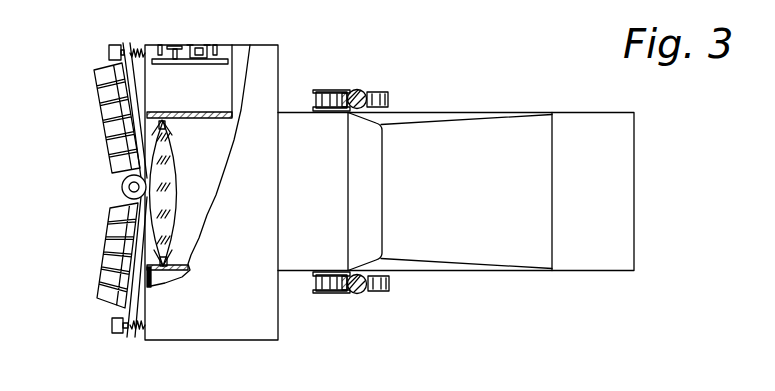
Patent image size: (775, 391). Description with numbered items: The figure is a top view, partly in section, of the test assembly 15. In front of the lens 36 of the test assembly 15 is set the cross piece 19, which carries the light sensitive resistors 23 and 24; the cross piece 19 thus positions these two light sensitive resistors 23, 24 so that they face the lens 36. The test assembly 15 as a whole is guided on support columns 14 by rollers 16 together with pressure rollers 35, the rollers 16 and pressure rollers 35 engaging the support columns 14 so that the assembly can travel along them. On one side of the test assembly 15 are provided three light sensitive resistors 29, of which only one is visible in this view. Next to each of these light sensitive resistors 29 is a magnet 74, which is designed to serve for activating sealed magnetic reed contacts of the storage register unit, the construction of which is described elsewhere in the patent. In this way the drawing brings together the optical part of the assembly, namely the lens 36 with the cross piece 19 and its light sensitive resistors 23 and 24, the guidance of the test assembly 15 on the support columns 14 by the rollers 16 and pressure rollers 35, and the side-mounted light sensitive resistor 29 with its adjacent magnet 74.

The test assembly 15 is at (438, 71).
The rollers 16 is at (329, 100).
The support columns 14 is at (360, 92).
The pressure rollers 35 is at (380, 91).
The light sensitive resistors 29 is at (177, 46).
The magnet 74 is at (208, 45).
The lens 36 is at (168, 188).
The cross piece 19 is at (105, 277).
The light sensitive resistor 23 is at (108, 113).
The light sensitive resistor 24 is at (108, 230).